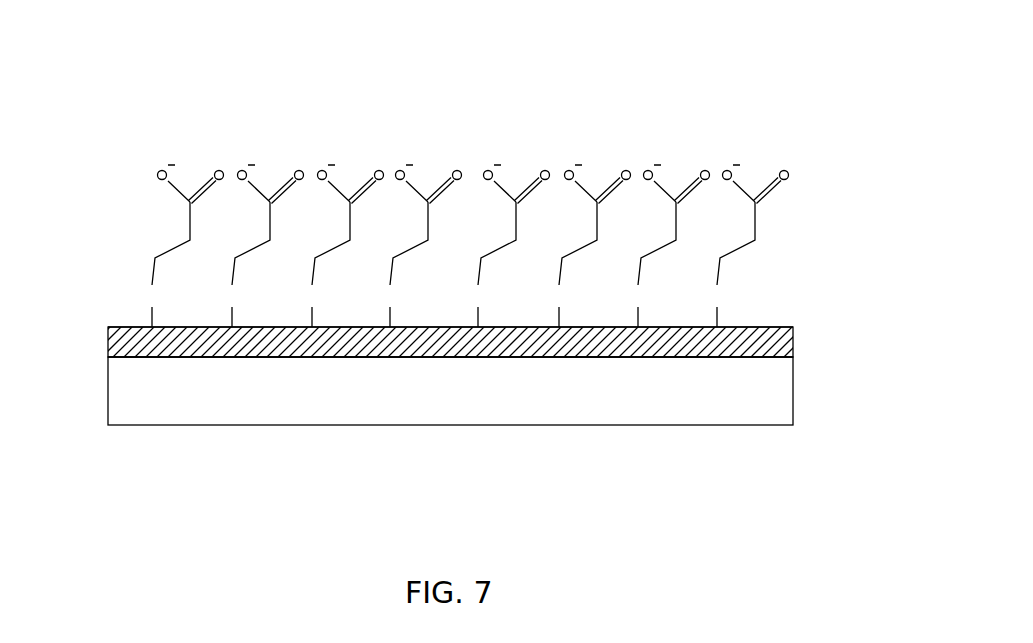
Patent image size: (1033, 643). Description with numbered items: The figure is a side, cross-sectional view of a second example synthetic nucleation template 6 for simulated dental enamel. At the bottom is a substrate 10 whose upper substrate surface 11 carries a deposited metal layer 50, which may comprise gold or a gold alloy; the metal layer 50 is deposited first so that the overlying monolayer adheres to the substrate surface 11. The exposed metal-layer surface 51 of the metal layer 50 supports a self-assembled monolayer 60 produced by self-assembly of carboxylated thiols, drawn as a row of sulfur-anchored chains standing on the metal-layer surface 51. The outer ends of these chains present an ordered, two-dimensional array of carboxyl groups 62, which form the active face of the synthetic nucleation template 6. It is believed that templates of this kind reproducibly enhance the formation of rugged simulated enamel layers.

The synthetic nucleation template 6 is at (693, 98).
The substrate 10 is at (793, 397).
The substrate surface 11 is at (108, 358).
The metal layer 50 is at (793, 343).
The metal-layer surface 51 is at (130, 327).
The self-assembled monolayer 60 is at (511, 209).
The carboxyl groups 62 is at (430, 163).